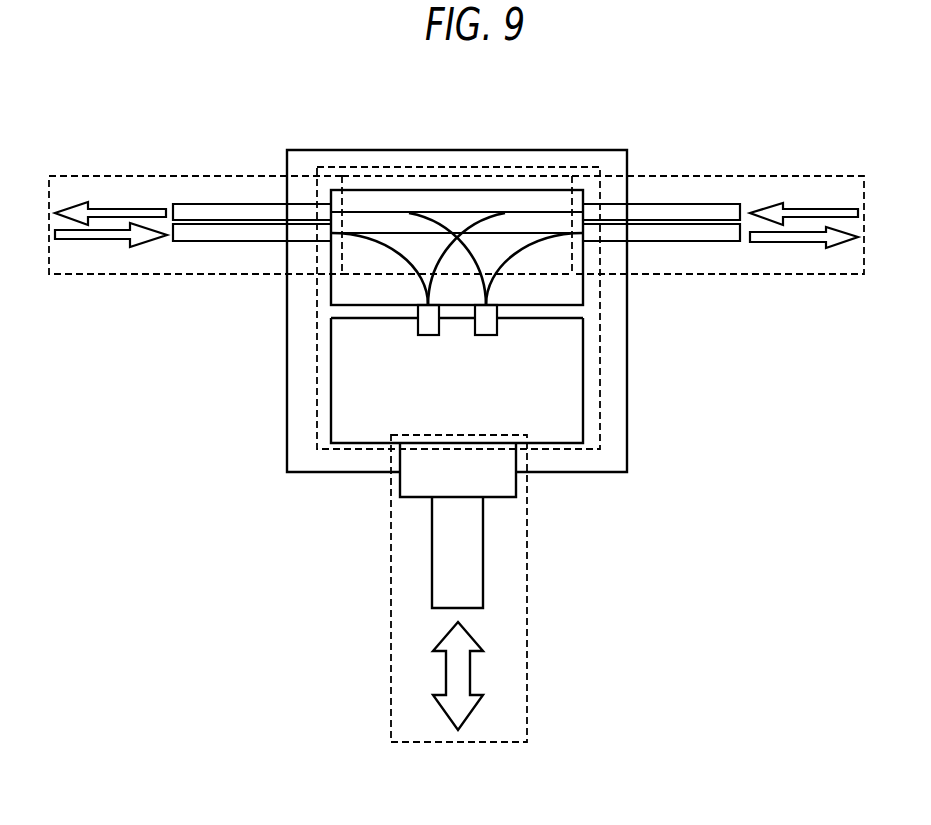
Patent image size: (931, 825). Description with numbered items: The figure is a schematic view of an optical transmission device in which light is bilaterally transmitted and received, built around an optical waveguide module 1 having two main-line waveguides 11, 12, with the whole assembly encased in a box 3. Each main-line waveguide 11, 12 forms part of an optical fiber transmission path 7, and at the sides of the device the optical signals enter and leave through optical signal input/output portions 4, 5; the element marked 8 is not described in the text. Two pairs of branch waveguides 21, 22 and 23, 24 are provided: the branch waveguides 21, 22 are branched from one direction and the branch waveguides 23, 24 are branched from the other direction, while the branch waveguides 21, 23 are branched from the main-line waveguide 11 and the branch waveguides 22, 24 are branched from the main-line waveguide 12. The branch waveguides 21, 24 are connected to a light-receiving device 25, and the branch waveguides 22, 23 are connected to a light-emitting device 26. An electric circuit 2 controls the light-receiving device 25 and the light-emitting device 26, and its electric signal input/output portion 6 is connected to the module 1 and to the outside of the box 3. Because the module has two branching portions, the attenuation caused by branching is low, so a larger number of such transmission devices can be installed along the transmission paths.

The optical waveguide module 1 is at (380, 150).
The electric circuit 2 is at (348, 452).
The box 3 is at (570, 473).
The optical signal input/output portion 4 is at (255, 177).
The optical signal input/output portion 5 is at (647, 177).
The electric signal input/output portion 6 is at (390, 557).
The optical fiber transmission path 7 is at (237, 242).
The upper optical fibers 8 is at (222, 203).
The main-line waveguide 11 is at (502, 233).
The main-line waveguide 12 is at (468, 213).
The branch waveguide 21 is at (408, 233).
The branch waveguide 22 is at (479, 267).
The branch waveguide 23 is at (506, 233).
The branch waveguide 24 is at (435, 267).
The light-receiving device 25 is at (418, 328).
The light-emitting device 26 is at (496, 328).